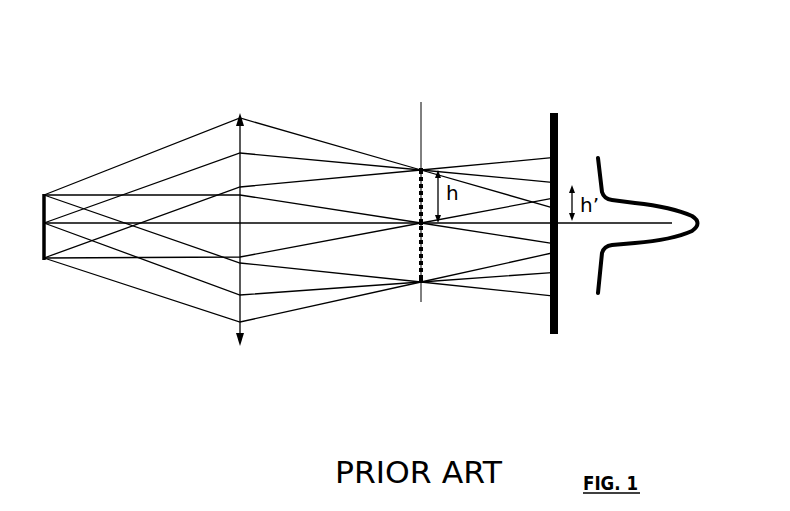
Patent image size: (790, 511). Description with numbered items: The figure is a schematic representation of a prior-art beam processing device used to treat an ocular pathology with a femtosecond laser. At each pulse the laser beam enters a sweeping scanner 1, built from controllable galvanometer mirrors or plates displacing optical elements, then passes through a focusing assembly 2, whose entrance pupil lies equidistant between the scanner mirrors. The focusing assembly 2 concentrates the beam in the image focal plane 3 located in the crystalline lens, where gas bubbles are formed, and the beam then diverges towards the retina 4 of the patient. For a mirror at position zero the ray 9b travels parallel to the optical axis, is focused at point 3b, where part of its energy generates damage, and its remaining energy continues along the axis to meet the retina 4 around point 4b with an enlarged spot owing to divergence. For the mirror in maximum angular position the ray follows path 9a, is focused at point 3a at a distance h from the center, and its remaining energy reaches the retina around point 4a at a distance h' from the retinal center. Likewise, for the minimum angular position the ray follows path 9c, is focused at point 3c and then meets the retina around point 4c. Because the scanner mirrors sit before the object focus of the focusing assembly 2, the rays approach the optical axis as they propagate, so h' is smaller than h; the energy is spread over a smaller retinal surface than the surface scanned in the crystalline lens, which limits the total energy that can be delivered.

The sweeping scanner 1 is at (44, 259).
The focusing assembly 2 is at (243, 348).
The image focal plane 3 is at (421, 302).
The point 3a is at (421, 169).
The point 3b is at (421, 223).
The point 3c is at (421, 282).
The retina 4 is at (555, 334).
The point 4a is at (552, 163).
The point 4b is at (552, 222).
The point 4c is at (552, 272).
The path 9a is at (168, 147).
The ray 9b is at (103, 223).
The path 9c is at (152, 263).